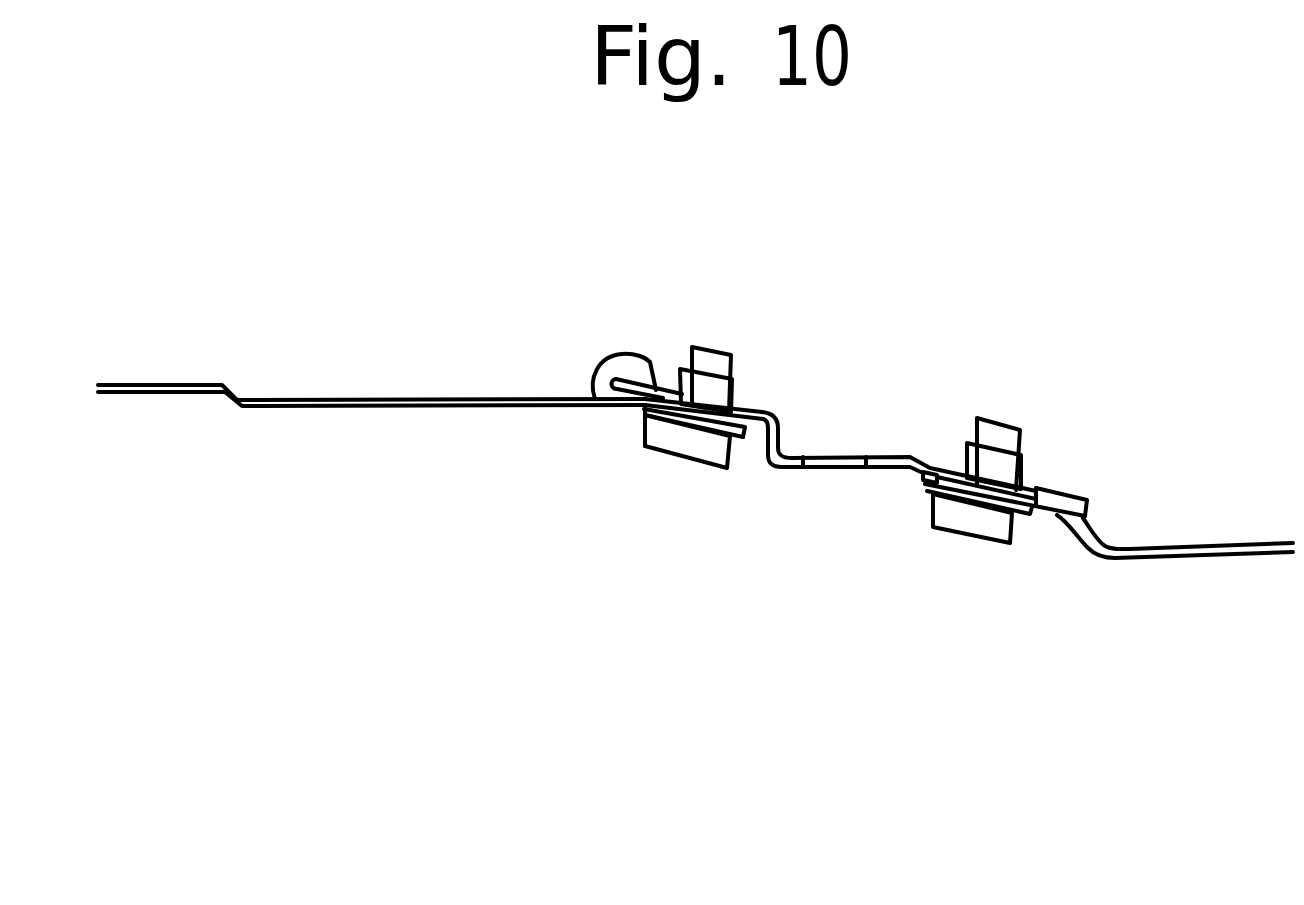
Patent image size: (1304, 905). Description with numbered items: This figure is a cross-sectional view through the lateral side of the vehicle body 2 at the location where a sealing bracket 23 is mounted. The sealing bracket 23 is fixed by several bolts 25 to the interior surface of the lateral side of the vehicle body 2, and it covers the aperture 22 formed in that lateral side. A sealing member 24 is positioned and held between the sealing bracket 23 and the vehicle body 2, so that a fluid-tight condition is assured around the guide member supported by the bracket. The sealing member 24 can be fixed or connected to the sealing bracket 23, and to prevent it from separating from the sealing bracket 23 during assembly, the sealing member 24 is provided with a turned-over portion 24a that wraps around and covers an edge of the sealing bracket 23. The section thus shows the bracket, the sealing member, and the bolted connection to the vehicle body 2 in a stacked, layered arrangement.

The vehicle body 2 is at (447, 406).
The aperture 22 is at (922, 475).
The sealing bracket 23 is at (777, 428).
The sealing member 24 is at (1052, 505).
The turned-over portion 24a is at (627, 353).
The bolts 25 is at (690, 450).